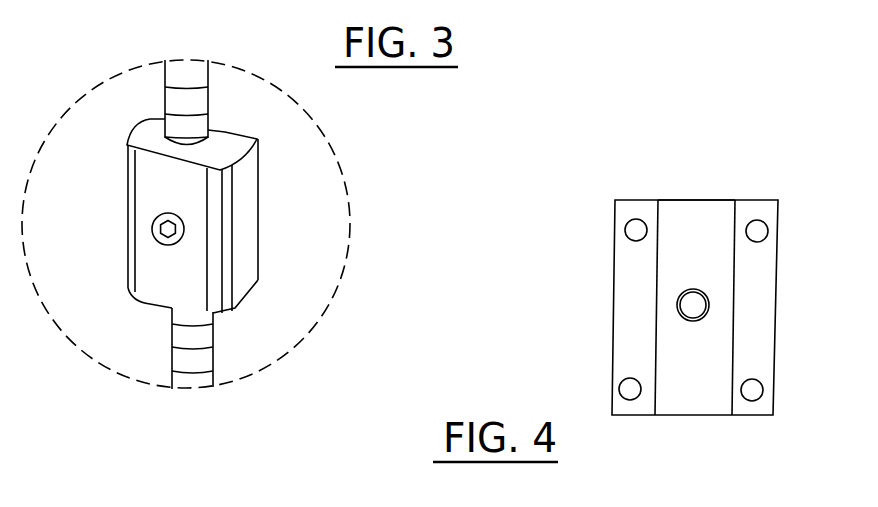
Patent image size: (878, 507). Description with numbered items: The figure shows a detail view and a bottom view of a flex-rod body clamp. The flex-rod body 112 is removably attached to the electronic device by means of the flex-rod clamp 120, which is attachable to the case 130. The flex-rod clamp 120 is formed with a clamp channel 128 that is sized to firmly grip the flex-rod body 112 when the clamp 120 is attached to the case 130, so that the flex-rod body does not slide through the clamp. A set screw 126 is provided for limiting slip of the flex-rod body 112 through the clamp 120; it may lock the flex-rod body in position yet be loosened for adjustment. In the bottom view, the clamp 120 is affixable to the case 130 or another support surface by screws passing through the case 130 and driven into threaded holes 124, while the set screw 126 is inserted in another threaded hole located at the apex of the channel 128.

In FIG. 3, the flex-rod body 112 is at (173, 335).
In FIG. 3, the flex-rod clamp 120 is at (245, 220).
In FIG. 4, the flex-rod clamp 120 is at (775, 295).
In FIG. 4, the mounting holes 124 is at (632, 222).
In FIG. 3, the set screw 126 is at (153, 232).
In FIG. 4, the set screw 126 is at (689, 302).
In FIG. 3, the clamp channel 128 is at (212, 140).
In FIG. 4, the clamp channel 128 is at (698, 210).
In FIG. 3, the case 130 is at (287, 288).